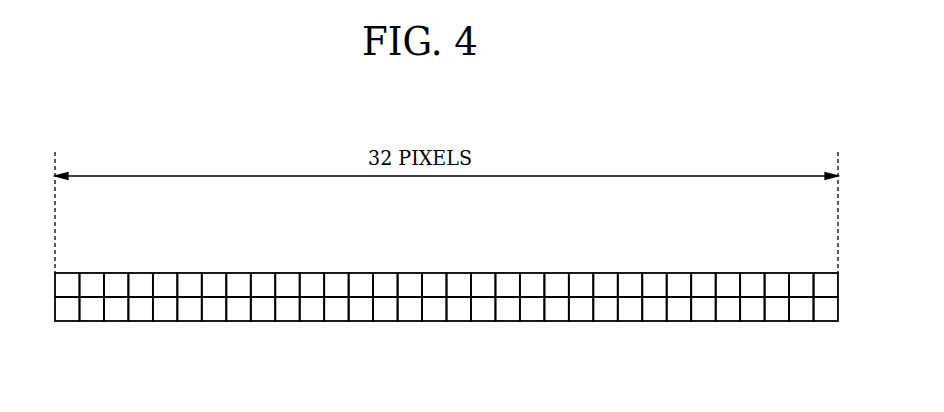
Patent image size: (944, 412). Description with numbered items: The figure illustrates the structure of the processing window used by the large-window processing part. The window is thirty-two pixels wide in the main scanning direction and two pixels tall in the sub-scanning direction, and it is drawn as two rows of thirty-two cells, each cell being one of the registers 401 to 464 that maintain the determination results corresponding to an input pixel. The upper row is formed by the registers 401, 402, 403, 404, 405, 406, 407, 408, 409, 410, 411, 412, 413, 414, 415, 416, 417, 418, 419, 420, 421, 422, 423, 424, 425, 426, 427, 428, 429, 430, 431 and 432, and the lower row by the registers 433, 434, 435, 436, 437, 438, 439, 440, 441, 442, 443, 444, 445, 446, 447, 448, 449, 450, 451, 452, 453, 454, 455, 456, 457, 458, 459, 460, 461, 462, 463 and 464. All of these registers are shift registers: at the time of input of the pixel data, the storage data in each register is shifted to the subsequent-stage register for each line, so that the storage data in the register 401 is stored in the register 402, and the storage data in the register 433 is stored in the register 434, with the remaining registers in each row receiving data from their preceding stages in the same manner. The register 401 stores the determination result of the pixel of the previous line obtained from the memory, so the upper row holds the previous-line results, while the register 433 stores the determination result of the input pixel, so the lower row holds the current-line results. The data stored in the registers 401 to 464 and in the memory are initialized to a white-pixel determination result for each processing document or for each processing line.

The register 401 is at (826, 272).
The register 402 is at (801, 272).
The register 403 is at (777, 272).
The register 404 is at (752, 272).
The register 405 is at (728, 272).
The register 406 is at (703, 272).
The register 407 is at (679, 272).
The register 408 is at (654, 272).
The register 409 is at (630, 272).
The register 410 is at (606, 272).
The register 411 is at (581, 272).
The register 412 is at (557, 272).
The register 413 is at (532, 272).
The register 414 is at (508, 272).
The register 415 is at (483, 272).
The register 416 is at (459, 272).
The register 417 is at (434, 272).
The register 418 is at (410, 272).
The register 419 is at (385, 272).
The register 420 is at (361, 272).
The register 421 is at (336, 272).
The register 422 is at (312, 272).
The register 423 is at (287, 272).
The register 424 is at (263, 272).
The register 425 is at (239, 272).
The register 426 is at (214, 272).
The register 427 is at (190, 272).
The register 428 is at (165, 272).
The register 429 is at (141, 272).
The register 430 is at (116, 272).
The register 431 is at (92, 272).
The register 432 is at (67, 272).
The register 433 is at (826, 321).
The register 434 is at (802, 321).
The register 435 is at (777, 321).
The register 436 is at (753, 321).
The register 437 is at (728, 321).
The register 438 is at (704, 321).
The register 439 is at (679, 321).
The register 440 is at (655, 321).
The register 441 is at (630, 321).
The register 442 is at (607, 321).
The register 443 is at (581, 321).
The register 444 is at (558, 321).
The register 445 is at (532, 321).
The register 446 is at (509, 321).
The register 447 is at (483, 321).
The register 448 is at (460, 321).
The register 449 is at (434, 321).
The register 450 is at (411, 321).
The register 451 is at (385, 321).
The register 452 is at (362, 321).
The register 453 is at (336, 321).
The register 454 is at (313, 321).
The register 455 is at (287, 321).
The register 456 is at (264, 321).
The register 457 is at (239, 321).
The register 458 is at (215, 321).
The register 459 is at (190, 321).
The register 460 is at (166, 321).
The register 461 is at (141, 321).
The register 462 is at (117, 321).
The register 463 is at (92, 321).
The register 464 is at (68, 321).